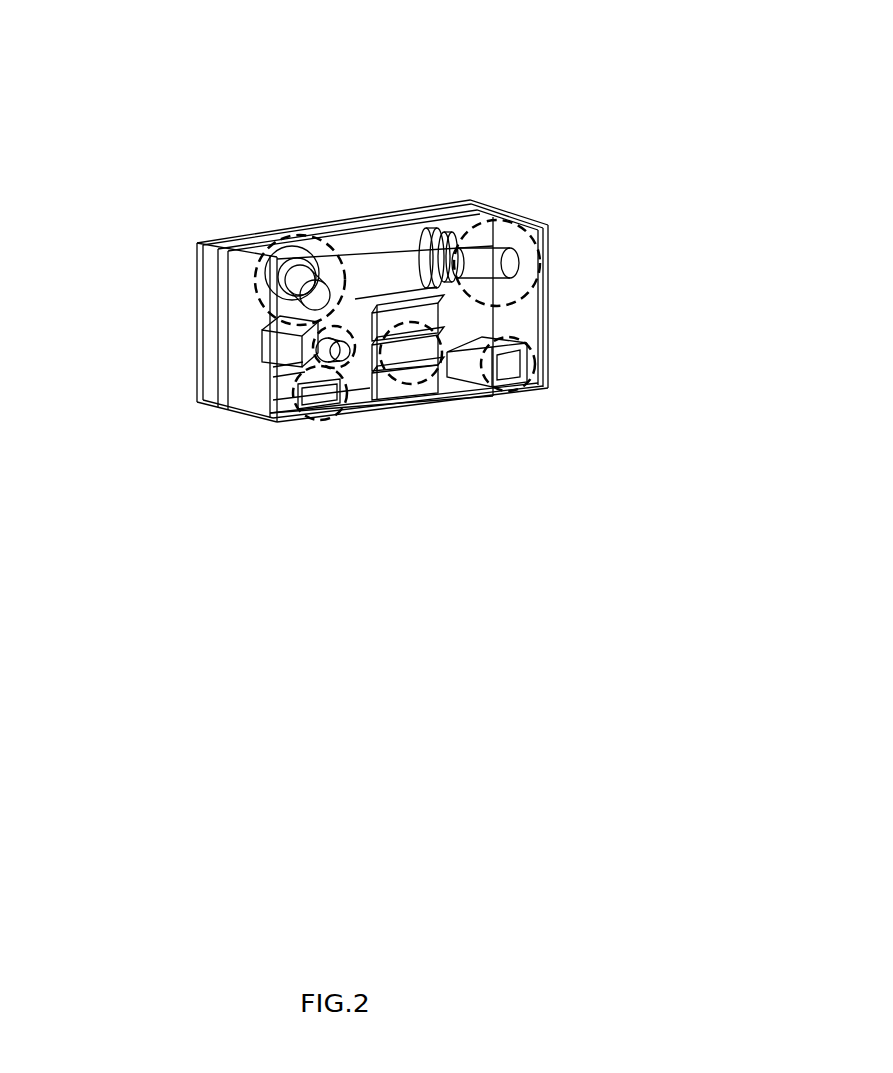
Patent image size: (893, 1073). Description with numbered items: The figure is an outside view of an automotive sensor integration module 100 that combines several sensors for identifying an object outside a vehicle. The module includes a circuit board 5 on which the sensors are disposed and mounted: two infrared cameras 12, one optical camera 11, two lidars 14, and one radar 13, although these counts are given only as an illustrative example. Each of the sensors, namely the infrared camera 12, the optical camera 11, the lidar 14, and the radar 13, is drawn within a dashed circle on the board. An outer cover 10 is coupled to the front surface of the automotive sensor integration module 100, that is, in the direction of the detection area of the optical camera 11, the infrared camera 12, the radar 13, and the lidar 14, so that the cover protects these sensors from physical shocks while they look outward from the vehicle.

The automotive sensor integration module 100 is at (549, 49).
The circuit board 5 is at (230, 240).
The outer cover 10 is at (263, 417).
The optical camera 11 is at (312, 346).
The infrared camera 12 is at (516, 225).
The radar 13 is at (418, 384).
The lidar 14 is at (495, 385).